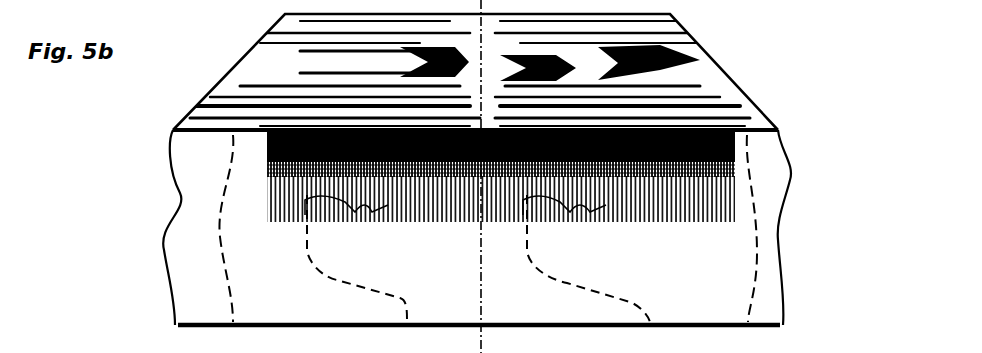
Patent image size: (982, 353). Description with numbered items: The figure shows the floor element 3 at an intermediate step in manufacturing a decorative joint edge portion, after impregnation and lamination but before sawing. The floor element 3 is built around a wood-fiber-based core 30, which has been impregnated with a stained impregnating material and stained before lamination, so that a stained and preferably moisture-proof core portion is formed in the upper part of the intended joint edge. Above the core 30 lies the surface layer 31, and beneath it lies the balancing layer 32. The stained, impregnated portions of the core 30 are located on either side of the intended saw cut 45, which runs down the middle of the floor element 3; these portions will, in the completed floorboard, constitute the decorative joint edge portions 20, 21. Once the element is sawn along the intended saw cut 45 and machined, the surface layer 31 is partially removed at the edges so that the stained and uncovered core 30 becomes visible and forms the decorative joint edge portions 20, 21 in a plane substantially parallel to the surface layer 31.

The floor element 3 is at (248, 72).
The surface layer 31 is at (192, 119).
The wood-fiber-based core 30 is at (190, 251).
The balancing layer 32 is at (770, 328).
The decorative joint edge portion 20 is at (363, 274).
The decorative joint edge portion 21 is at (564, 274).
The intended saw cut 45 is at (570, 284).